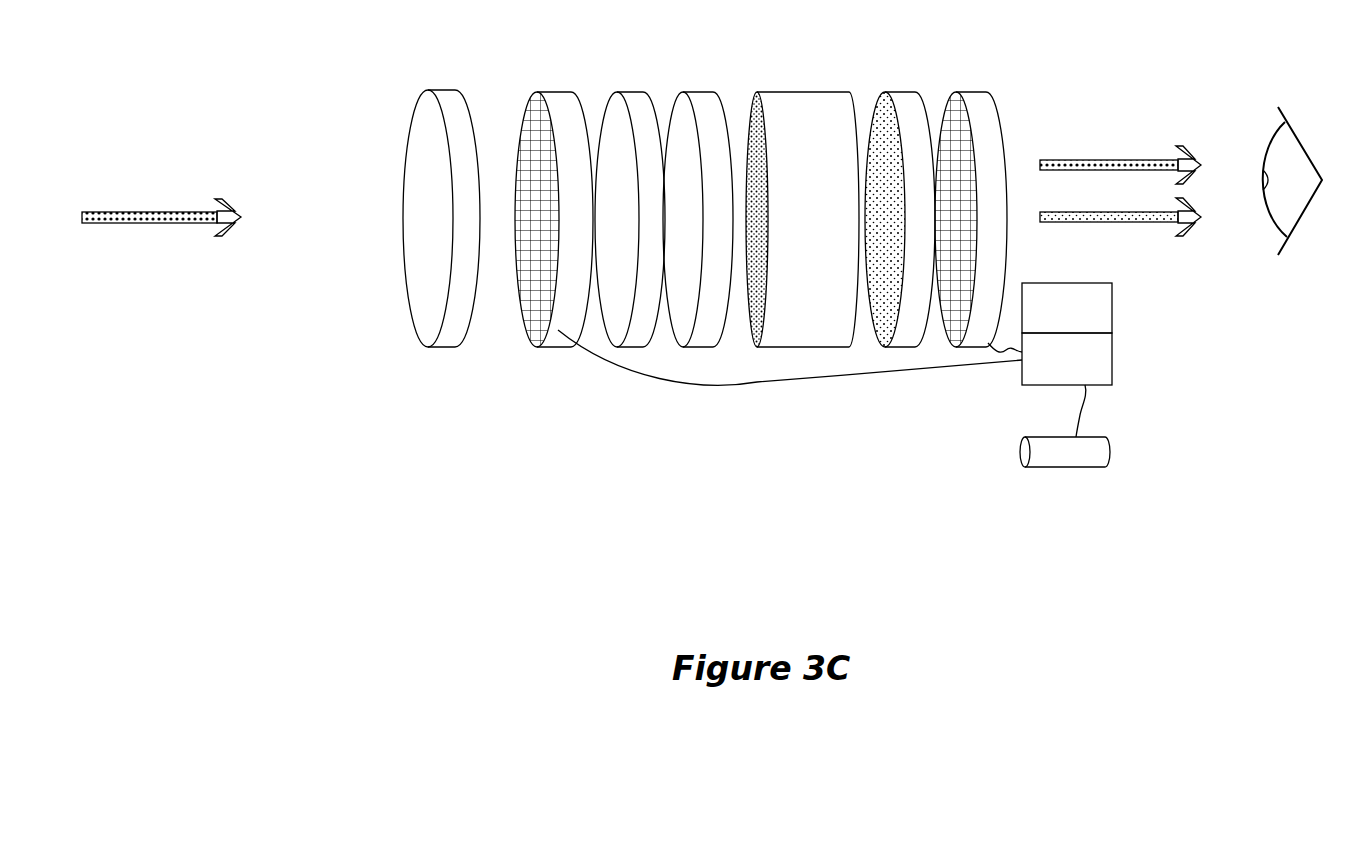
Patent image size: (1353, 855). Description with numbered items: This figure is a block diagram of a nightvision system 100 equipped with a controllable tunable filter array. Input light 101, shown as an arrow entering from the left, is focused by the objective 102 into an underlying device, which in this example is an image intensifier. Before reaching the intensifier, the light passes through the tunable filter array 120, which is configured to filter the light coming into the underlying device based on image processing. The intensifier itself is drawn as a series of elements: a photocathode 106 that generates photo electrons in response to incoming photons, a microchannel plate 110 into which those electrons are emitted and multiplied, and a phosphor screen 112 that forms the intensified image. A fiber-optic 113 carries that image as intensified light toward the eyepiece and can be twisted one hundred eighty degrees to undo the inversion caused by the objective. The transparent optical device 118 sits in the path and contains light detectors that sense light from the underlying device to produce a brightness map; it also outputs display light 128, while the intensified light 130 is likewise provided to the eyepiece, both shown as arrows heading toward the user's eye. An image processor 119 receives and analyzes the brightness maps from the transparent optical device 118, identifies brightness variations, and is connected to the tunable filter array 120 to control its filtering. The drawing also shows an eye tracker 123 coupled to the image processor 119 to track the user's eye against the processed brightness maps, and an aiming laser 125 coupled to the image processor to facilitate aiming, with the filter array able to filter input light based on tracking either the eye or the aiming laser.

The nightvision system 100 is at (688, 314).
The input light 101 is at (140, 213).
The objective 102 is at (430, 157).
The photocathode 106 is at (700, 92).
The microchannel plate 110 is at (802, 219).
The phosphor screen 112 is at (885, 92).
The fiber-optic 113 is at (900, 97).
The transparent optical device 118 is at (980, 92).
The image processor 119 is at (835, 357).
The tunable filter array 120 is at (551, 93).
The eye tracker 123 is at (1067, 308).
The aiming laser 125 is at (1065, 426).
The display light 128 is at (1065, 160).
The intensified light 130 is at (1060, 212).